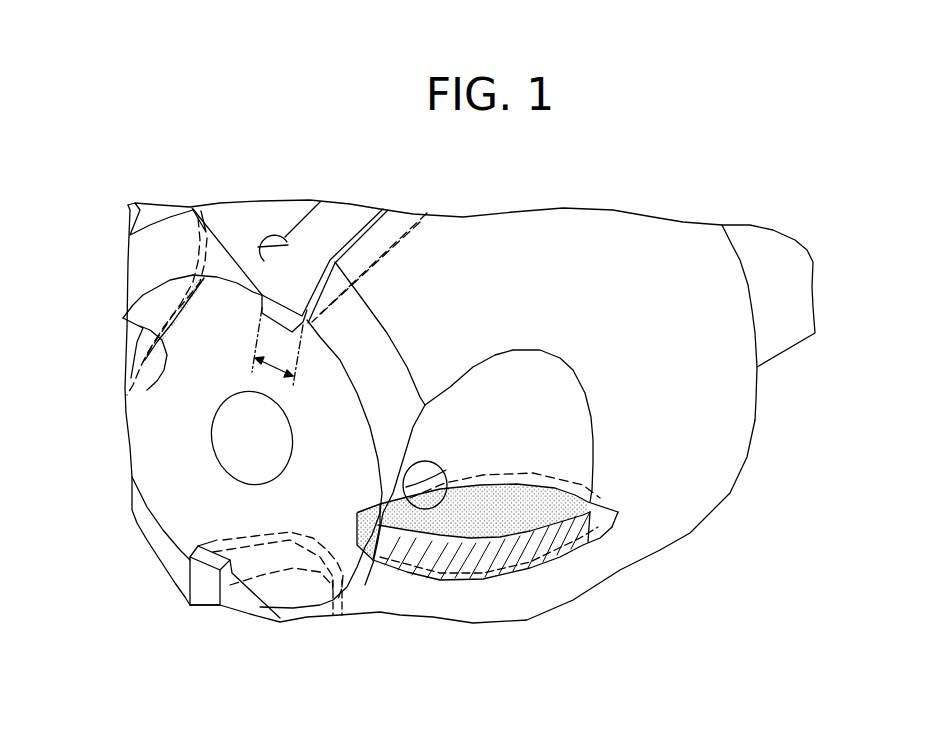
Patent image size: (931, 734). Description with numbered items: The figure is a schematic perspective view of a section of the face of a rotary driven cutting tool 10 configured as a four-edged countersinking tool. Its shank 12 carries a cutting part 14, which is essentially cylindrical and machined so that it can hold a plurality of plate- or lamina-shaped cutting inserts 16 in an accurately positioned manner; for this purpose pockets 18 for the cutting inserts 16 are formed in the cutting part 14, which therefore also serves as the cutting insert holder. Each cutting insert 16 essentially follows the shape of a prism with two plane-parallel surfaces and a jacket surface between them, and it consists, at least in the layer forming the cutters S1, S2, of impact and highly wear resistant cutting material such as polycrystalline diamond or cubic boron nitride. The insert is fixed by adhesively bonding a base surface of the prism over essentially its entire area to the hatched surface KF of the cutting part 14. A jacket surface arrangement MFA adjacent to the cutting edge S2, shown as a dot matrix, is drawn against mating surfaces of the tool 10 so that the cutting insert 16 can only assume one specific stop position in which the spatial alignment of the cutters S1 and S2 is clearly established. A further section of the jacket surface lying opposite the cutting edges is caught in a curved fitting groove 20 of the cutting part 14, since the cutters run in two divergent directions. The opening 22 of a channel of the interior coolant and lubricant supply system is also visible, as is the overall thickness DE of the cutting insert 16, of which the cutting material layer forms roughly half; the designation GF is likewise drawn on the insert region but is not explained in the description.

The cutting tool 10 is at (565, 252).
The shank 12 is at (780, 248).
The cutting part 14 is at (697, 467).
The cutting insert 16 is at (327, 227).
The pocket 18 is at (527, 440).
The fitting groove 20 is at (495, 589).
The opening of a channel 22 is at (258, 248).
The ground face GF is at (358, 246).
The overall thickness DE is at (273, 367).
The jacket surface arrangement MFA is at (147, 390).
The bonding surface KF is at (468, 558).
The cutter S1 is at (403, 523).
The cutter S2 is at (520, 540).